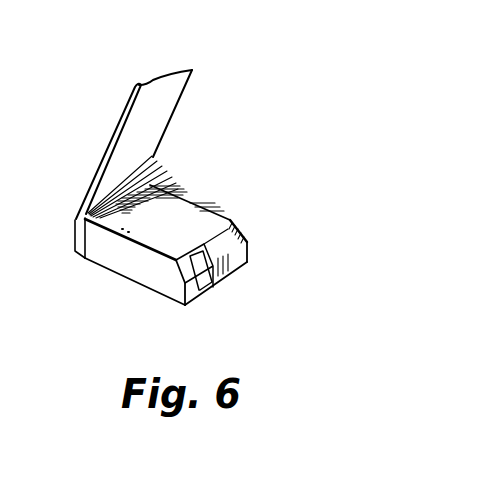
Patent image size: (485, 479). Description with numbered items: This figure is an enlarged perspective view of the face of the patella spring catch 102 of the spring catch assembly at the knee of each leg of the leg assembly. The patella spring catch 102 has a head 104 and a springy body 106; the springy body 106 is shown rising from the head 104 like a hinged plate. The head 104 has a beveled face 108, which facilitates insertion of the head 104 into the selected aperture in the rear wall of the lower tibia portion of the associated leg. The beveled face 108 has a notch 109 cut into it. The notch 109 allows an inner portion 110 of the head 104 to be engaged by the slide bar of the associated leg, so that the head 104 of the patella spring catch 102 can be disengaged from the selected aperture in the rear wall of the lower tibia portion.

The patella spring catch 102 is at (95, 174).
The head 104 is at (260, 157).
The springy body 106 is at (121, 118).
The beveled face 108 is at (246, 258).
The notch 109 is at (212, 268).
The inner portion 110 is at (190, 300).